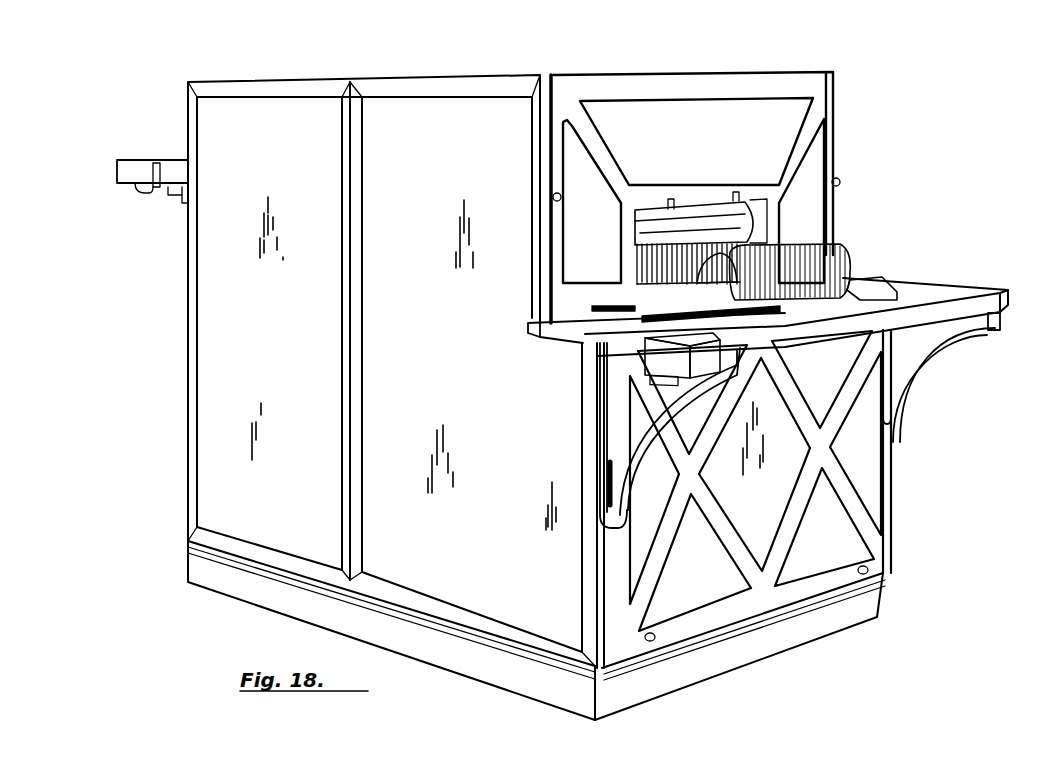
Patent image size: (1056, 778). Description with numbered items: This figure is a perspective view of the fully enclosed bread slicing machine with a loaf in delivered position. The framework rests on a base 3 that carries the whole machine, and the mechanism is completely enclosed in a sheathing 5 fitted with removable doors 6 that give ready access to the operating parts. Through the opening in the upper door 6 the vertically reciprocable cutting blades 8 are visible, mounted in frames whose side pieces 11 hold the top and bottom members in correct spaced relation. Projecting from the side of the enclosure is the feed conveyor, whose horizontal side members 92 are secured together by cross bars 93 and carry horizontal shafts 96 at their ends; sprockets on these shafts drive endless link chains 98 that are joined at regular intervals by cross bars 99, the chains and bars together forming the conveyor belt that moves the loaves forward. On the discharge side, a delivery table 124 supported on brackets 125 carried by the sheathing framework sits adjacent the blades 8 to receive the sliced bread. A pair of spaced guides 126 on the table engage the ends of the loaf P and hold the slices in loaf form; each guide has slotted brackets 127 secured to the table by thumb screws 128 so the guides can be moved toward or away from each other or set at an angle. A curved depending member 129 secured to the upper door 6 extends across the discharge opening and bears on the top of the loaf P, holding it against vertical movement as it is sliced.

The base 3 is at (300, 585).
The sheathing 5 is at (318, 109).
The removable doors 6 is at (741, 128).
The cutting blades 8 is at (638, 265).
The side pieces 11 is at (768, 238).
The loaf of bread P is at (853, 252).
The conveyor side members 92 is at (130, 160).
The cross bars 93 is at (156, 163).
The horizontal shafts 96 is at (140, 194).
The endless link chains 98 is at (179, 200).
The cross bars (belt slats) 99 is at (184, 206).
The delivery table 124 is at (1012, 282).
The brackets 125 is at (622, 458).
The guides 126 is at (880, 284).
The slotted brackets 127 is at (633, 327).
The thumb screws 128 is at (712, 322).
The curved depending guide member 129 is at (706, 223).